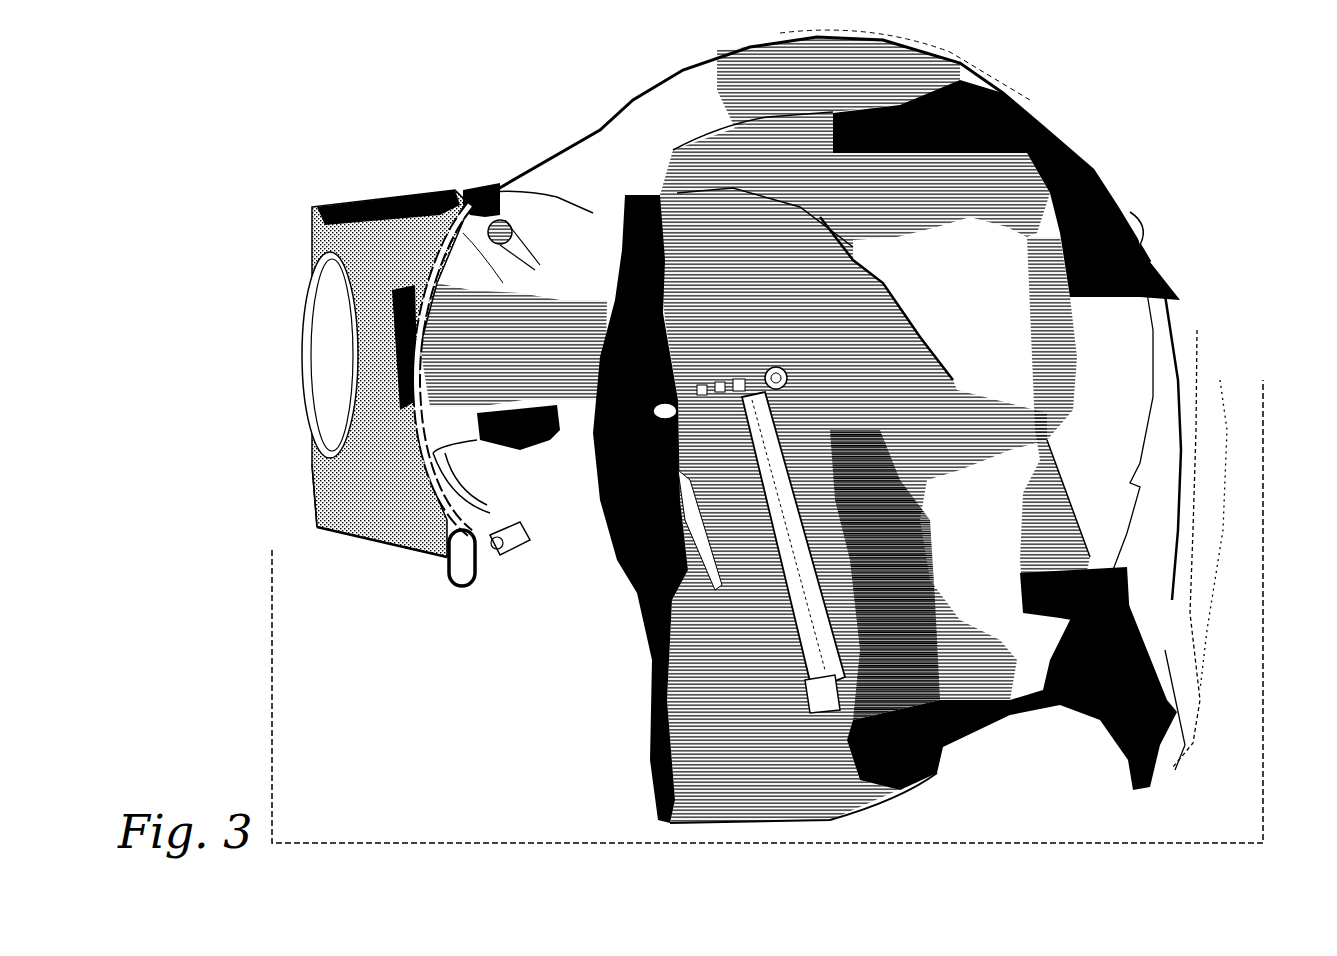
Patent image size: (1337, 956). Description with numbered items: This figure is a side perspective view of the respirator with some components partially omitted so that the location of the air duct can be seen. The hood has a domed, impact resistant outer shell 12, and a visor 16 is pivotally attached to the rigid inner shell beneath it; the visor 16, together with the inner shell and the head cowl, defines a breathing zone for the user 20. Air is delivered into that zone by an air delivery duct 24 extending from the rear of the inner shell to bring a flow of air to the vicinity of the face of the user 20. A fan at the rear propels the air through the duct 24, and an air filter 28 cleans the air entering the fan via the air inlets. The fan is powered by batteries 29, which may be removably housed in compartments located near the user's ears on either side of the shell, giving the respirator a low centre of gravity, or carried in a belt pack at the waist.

The outer shell 12 is at (1060, 118).
The visor 16 is at (1223, 377).
The user 20 is at (1027, 710).
The air delivery duct 24 is at (585, 150).
The air filter 28 is at (357, 195).
The batteries 29 is at (770, 693).